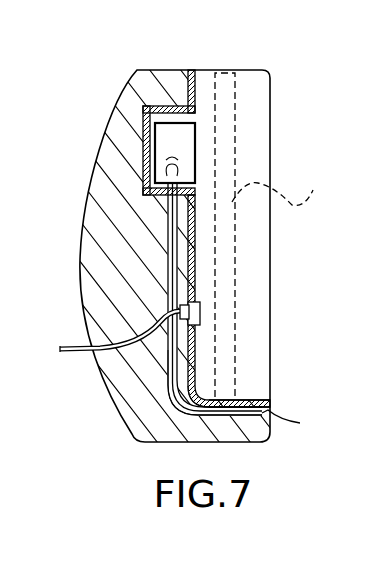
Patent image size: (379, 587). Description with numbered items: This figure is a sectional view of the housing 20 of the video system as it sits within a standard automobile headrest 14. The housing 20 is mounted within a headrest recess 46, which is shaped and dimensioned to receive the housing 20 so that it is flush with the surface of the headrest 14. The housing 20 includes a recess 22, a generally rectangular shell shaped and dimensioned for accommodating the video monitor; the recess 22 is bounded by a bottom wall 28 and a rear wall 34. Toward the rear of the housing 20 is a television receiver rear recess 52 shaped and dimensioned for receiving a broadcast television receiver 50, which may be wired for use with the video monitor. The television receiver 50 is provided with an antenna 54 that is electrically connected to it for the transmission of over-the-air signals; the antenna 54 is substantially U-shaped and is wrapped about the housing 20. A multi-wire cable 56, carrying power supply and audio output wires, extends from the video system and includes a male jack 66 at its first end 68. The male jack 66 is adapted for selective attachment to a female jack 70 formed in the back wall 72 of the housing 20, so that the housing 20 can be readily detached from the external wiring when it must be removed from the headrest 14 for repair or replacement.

The headrest 14 is at (139, 70).
The housing 20 is at (271, 113).
The recess 22 is at (253, 102).
The bottom wall 28 is at (257, 399).
The rear wall 34 is at (195, 280).
The headrest recess 46 is at (180, 384).
The television receiver 50 is at (170, 130).
The television receiver rear recess 52 is at (143, 138).
The antenna 54 is at (285, 305).
The multi-wire cable 56 is at (62, 348).
The male jack 66 is at (184, 302).
The first end 68 is at (172, 348).
The female jack 70 is at (201, 307).
The back wall 72 is at (193, 223).